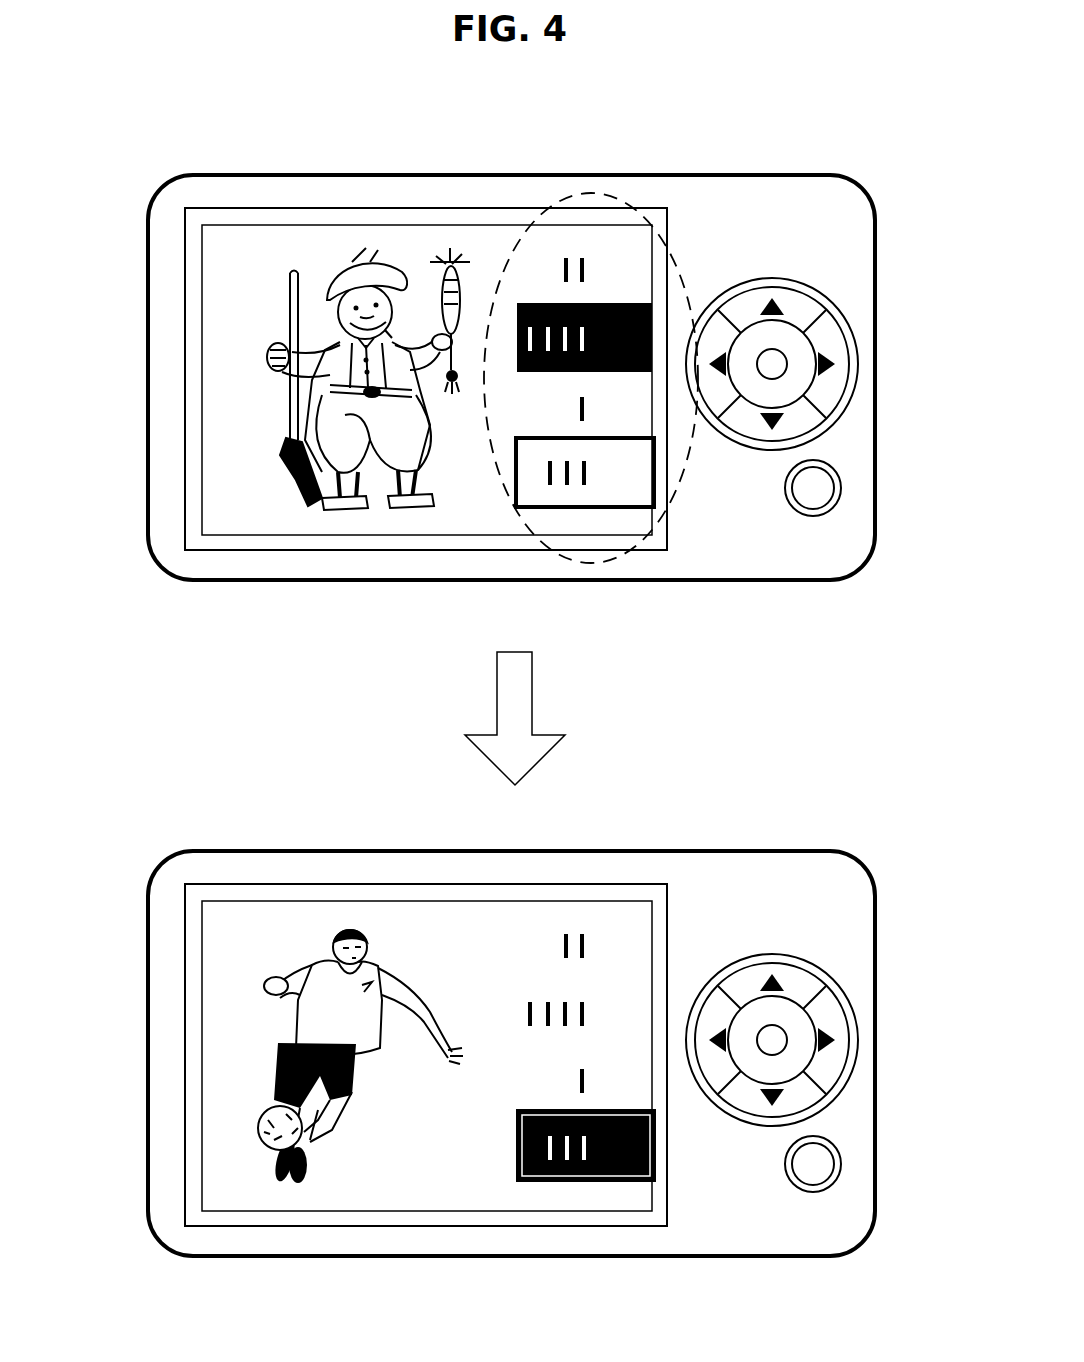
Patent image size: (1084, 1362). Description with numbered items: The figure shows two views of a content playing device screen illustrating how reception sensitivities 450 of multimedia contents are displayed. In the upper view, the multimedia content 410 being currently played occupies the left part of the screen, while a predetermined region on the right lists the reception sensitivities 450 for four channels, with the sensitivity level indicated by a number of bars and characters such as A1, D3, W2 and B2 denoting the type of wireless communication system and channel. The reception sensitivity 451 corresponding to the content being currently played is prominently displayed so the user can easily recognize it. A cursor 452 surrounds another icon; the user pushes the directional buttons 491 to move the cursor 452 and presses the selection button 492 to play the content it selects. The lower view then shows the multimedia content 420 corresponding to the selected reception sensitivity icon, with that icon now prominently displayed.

The multimedia content being currently played 410 is at (207, 283).
The multimedia content corresponding to selected reception sensitivity icon 420 is at (207, 959).
The reception sensitivities 450 is at (656, 379).
The reception sensitivity corresponding to the currently played content 451 is at (652, 333).
The cursor 452 is at (655, 480).
The directional buttons 491 is at (842, 303).
The selection button 492 is at (833, 468).